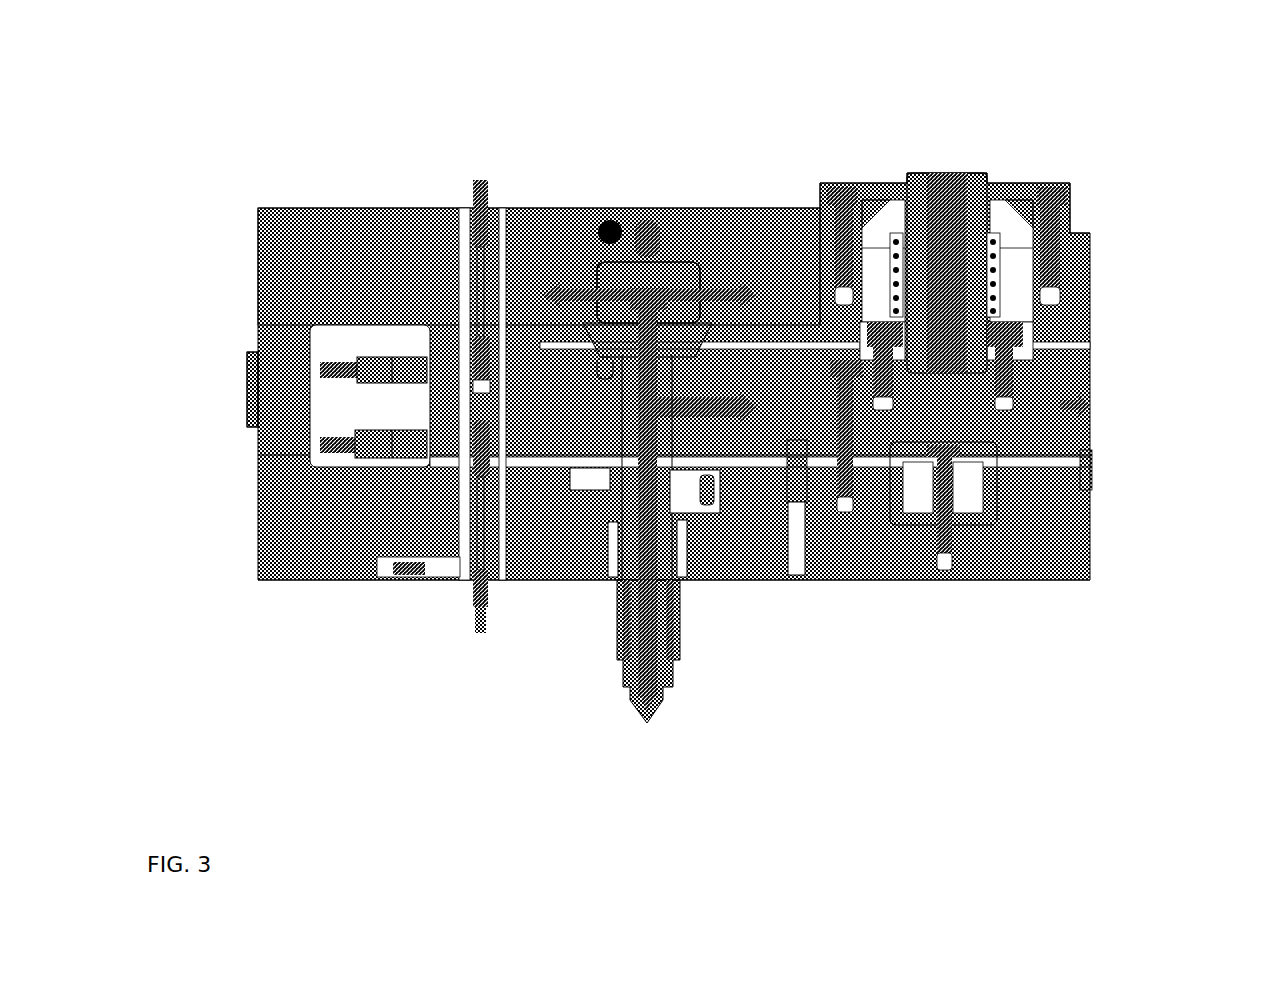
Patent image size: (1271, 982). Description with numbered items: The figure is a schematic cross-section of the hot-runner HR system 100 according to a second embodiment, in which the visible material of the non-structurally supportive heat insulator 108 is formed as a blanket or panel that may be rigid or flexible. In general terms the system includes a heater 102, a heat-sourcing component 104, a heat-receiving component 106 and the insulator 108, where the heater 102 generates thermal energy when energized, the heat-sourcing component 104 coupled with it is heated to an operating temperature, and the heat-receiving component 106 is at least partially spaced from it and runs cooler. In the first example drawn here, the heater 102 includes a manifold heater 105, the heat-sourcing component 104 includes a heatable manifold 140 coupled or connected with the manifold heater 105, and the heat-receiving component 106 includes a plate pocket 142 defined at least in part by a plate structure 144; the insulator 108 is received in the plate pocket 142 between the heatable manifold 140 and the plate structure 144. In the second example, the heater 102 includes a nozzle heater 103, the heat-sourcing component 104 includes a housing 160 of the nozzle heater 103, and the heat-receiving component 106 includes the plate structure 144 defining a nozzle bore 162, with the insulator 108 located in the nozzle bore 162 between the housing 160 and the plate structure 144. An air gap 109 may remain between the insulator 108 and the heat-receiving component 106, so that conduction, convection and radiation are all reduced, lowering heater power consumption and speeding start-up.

The HR system 100 is at (1110, 128).
The heater 102 is at (468, 133).
The nozzle heater 103 is at (623, 647).
The heat-sourcing component 104 is at (508, 710).
The manifold heater 105 is at (590, 365).
The heat-receiving component 106 is at (664, 133).
The non-structurally supportive heat insulator 108 is at (527, 343).
The air gap 109 is at (752, 335).
The heatable manifold 140 is at (567, 437).
The plate pocket 142 is at (333, 417).
The plate structure 144 is at (573, 210).
The housing 160 is at (680, 647).
The nozzle bore 162 is at (757, 463).